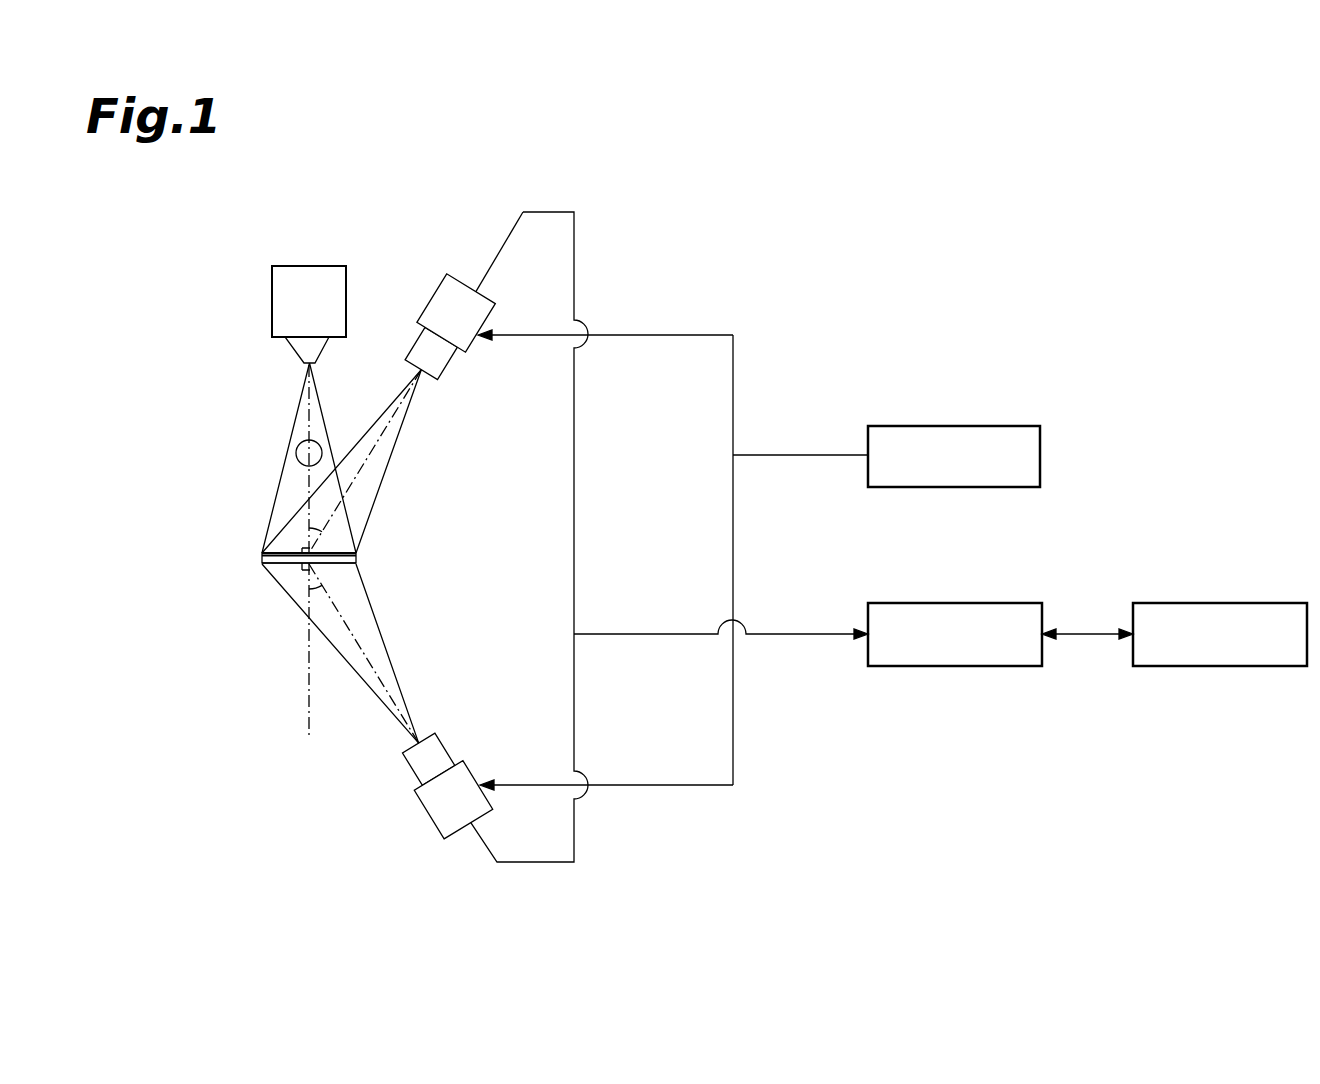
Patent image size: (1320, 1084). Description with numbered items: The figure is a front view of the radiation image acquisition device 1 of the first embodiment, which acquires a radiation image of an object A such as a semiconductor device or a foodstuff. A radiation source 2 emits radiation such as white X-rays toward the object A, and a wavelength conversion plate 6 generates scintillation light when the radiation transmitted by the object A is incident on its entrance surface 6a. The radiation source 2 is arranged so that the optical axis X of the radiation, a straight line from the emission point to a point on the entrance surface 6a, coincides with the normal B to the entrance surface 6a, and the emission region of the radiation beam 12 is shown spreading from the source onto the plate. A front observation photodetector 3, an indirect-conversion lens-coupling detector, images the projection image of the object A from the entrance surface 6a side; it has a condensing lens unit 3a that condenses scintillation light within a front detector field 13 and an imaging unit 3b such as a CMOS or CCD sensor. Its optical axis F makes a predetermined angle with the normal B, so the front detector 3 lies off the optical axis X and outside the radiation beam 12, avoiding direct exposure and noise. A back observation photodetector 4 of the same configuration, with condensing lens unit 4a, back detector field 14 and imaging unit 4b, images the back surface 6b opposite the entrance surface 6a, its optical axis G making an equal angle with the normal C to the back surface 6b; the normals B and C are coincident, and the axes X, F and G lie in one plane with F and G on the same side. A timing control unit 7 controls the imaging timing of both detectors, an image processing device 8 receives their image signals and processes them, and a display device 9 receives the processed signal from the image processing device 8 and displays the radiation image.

The radiation image acquisition device 1 is at (920, 265).
The radiation source 2 is at (307, 266).
The front observation photodetector 3 is at (471, 294).
The condensing lens unit 3a is at (452, 370).
The imaging unit 3b is at (436, 298).
The back observation photodetector 4 is at (412, 823).
The condensing lens unit 4a is at (415, 772).
The imaging unit 4b is at (432, 815).
The wavelength conversion plate 6 is at (299, 564).
The entrance surface 6a is at (346, 552).
The back surface 6b is at (343, 564).
The timing control unit 7 is at (982, 427).
The image processing device 8 is at (997, 602).
The display device 9 is at (1248, 602).
The radiation beam 12 is at (292, 488).
The front detector field 13 is at (368, 495).
The back detector field 14 is at (380, 650).
The object A is at (298, 462).
The normal to the entrance surface B is at (330, 460).
The normal to the back surface C is at (307, 633).
The optical axis of the condensing lens unit 3a F is at (380, 442).
The optical axis of the condensing lens unit 4a G is at (393, 693).
The optical axis of the radiation X is at (300, 410).